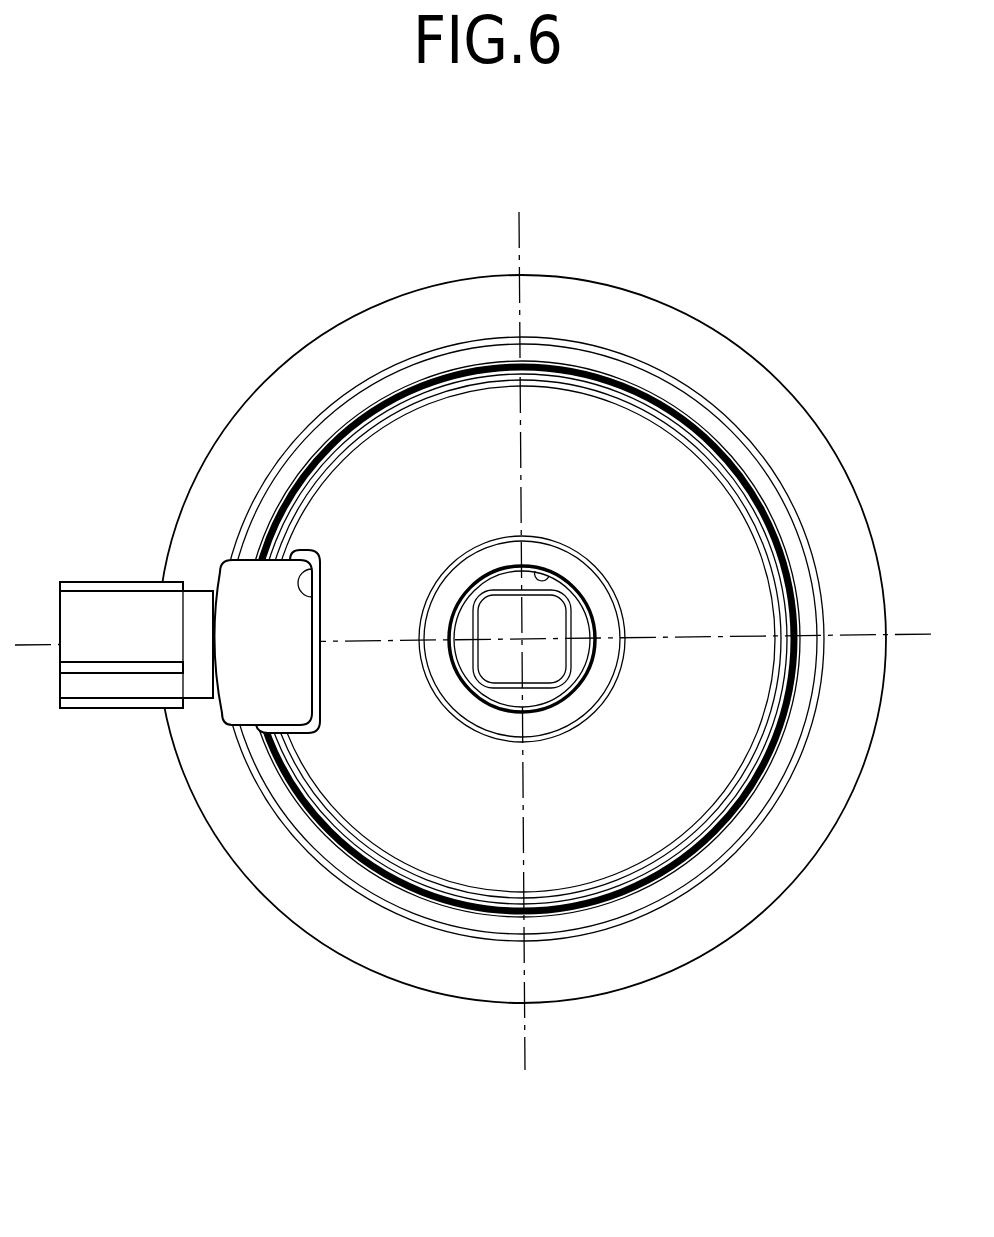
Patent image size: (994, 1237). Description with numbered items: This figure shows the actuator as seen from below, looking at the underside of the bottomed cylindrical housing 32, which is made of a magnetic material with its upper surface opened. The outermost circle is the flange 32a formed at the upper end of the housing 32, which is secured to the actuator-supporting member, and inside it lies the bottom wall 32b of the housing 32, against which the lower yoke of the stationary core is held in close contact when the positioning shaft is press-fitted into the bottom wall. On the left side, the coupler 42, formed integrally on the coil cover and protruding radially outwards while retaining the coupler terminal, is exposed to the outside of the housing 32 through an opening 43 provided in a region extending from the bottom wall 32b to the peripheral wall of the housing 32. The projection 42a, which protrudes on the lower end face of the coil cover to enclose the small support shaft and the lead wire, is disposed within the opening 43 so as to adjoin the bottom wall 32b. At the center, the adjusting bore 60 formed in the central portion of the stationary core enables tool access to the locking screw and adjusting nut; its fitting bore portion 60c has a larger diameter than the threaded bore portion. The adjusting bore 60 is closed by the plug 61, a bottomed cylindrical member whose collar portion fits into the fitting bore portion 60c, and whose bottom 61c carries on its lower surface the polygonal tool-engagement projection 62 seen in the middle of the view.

The housing 32 is at (662, 338).
The flange 32a is at (772, 403).
The bottom wall 32b is at (413, 452).
The coupler 42 is at (97, 610).
The projection 42a is at (243, 702).
The opening 43 is at (305, 575).
The adjusting bore 60 is at (531, 534).
The fitting bore portion 60c is at (543, 578).
The plug 61 is at (494, 664).
The bottom 61c is at (538, 698).
The tool-engagement projection 62 is at (553, 623).